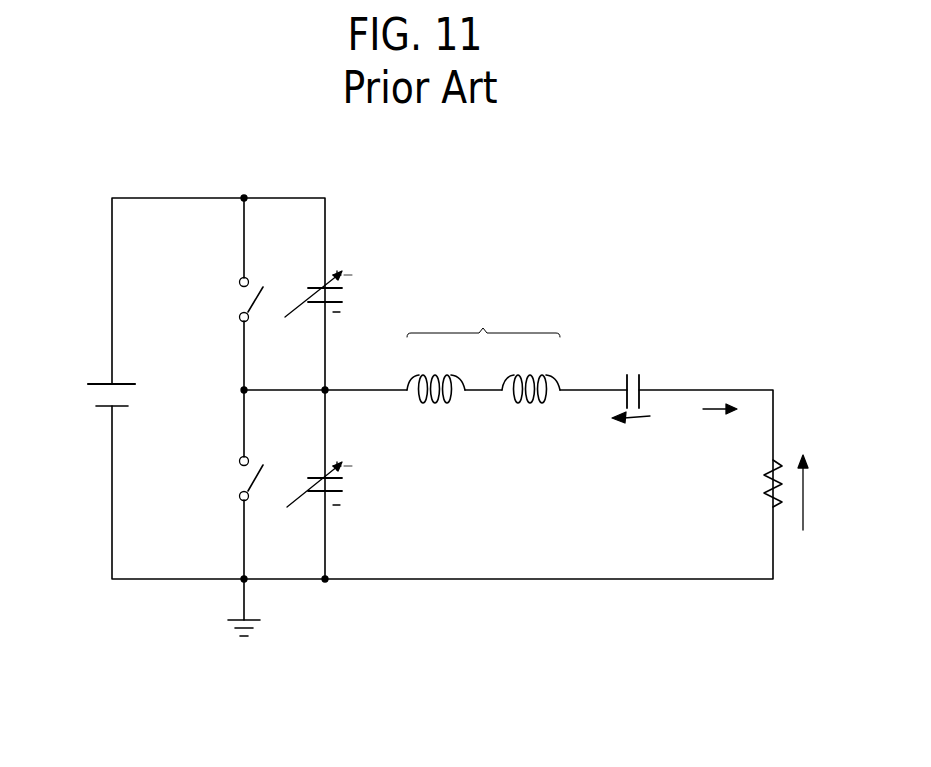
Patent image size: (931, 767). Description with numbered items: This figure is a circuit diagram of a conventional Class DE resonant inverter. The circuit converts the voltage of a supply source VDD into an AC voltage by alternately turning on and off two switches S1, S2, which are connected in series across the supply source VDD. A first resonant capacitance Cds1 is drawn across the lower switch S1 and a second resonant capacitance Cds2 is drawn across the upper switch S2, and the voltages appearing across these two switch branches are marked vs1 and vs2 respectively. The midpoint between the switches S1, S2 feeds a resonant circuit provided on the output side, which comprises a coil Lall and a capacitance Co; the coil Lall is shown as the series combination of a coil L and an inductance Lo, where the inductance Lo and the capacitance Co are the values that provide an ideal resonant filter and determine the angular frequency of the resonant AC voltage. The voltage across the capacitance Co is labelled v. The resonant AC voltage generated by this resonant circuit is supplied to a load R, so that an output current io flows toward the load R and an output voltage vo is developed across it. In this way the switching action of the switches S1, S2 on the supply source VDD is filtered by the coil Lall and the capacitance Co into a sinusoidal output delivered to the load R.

The supply source VDD is at (87, 397).
The switch S1 is at (235, 479).
The switch S2 is at (235, 300).
The first resonant capacitance Cds1 is at (307, 499).
The resonant capacitance Cds2 is at (307, 307).
The voltage across switch S1 vs1 is at (359, 483).
The voltage across switch S2 vs2 is at (359, 291).
The coil Lall is at (483, 322).
The inductor L is at (436, 376).
The inductance Lo is at (531, 376).
The capacitance Co is at (632, 377).
The capacitor voltage v is at (631, 428).
The output current io is at (720, 418).
The load R is at (760, 483).
The output voltage vo is at (814, 492).